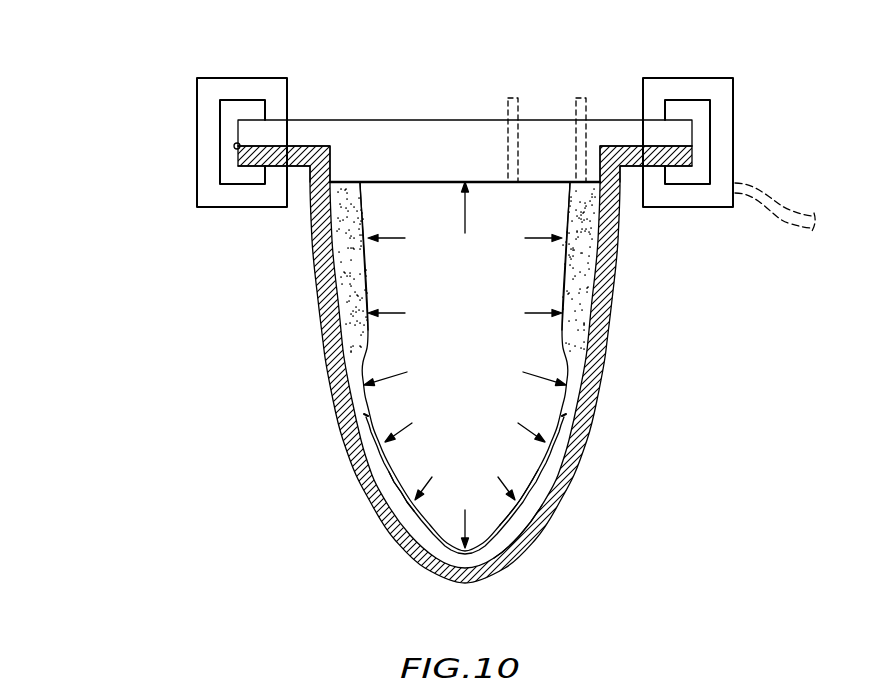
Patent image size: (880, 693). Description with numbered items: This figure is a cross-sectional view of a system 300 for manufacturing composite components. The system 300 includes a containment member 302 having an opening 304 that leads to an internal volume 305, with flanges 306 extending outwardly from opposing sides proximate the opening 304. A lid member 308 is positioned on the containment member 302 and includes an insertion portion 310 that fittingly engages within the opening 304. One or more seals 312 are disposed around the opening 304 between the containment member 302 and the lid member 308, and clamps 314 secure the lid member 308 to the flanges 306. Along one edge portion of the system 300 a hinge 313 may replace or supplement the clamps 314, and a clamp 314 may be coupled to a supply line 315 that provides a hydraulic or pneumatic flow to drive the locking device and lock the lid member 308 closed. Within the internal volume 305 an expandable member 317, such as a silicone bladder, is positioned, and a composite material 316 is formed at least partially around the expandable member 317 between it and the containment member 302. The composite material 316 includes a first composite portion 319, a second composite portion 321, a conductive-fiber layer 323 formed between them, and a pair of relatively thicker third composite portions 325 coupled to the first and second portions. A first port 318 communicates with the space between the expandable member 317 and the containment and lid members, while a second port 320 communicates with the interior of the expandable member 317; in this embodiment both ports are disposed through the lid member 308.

The system for manufacturing composite components 300 is at (146, 75).
The containment member 302 is at (340, 437).
The opening 304 is at (438, 195).
The internal volume 305 is at (492, 339).
The flanges 306 is at (297, 168).
The lid member 308 is at (407, 119).
The insertion portion 310 is at (387, 183).
The seals 312 is at (282, 147).
The hinge 313 is at (233, 146).
The clamps 314 is at (247, 78).
The supply line 315 is at (767, 190).
The composite material 316 is at (585, 277).
The expandable member 317 is at (563, 328).
The first port 318 is at (578, 98).
The first composite portion 319 is at (520, 527).
The second port 320 is at (513, 98).
The second composite portion 321 is at (540, 470).
The conductive-fiber layer 323 is at (400, 500).
The third composite portions 325 is at (563, 287).